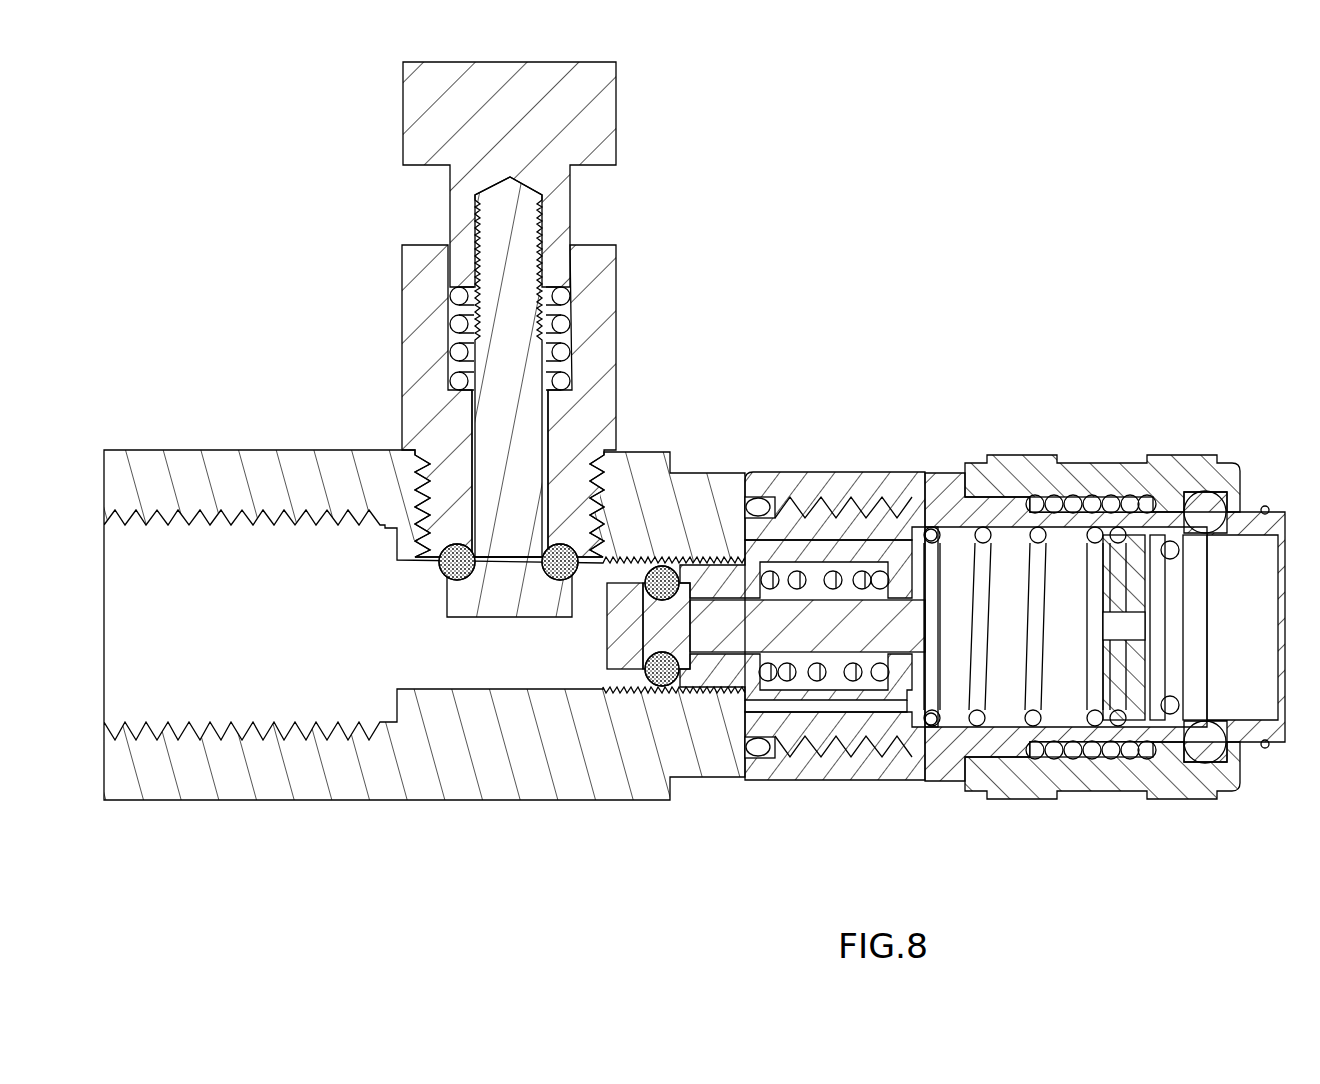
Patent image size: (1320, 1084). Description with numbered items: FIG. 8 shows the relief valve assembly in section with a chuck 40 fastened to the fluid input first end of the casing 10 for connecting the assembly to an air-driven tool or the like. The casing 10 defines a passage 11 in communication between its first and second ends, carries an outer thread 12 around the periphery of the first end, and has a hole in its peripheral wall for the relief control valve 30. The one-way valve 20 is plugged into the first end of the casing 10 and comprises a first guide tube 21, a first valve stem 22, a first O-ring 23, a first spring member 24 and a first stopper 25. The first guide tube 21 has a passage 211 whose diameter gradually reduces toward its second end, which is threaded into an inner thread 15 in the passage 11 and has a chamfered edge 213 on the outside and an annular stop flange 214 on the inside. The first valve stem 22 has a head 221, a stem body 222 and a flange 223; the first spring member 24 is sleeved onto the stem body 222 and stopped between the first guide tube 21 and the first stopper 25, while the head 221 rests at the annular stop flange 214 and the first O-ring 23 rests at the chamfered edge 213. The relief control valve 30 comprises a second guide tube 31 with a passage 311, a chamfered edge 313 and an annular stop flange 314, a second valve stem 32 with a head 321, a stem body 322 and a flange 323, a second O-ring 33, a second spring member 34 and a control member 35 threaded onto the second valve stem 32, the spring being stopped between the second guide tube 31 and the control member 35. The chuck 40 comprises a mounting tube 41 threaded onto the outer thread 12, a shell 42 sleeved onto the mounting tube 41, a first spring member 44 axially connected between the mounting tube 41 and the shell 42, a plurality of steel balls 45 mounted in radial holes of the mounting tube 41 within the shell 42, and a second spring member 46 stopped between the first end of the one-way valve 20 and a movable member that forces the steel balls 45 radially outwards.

The casing 10 is at (389, 830).
The passage 11 is at (500, 682).
The inner thread 15 is at (603, 692).
The outer thread 12 is at (837, 664).
The one-way valve 20 is at (902, 495).
The first guide tube 21 is at (833, 644).
The passage 211 is at (880, 684).
The chamfered edge 213 is at (762, 512).
The annular stop flange 214 is at (828, 500).
The first valve stem 22 is at (759, 737).
The head 221 is at (625, 624).
The stem body 222 is at (718, 618).
The flange 223 is at (693, 626).
The first O-ring 23 is at (660, 566).
The first spring member 24 is at (895, 682).
The first stopper 25 is at (928, 740).
The relief control valve 30 is at (300, 194).
The second guide tube 31 is at (608, 262).
The passage 311 is at (562, 316).
The chamfered edge 313 is at (438, 550).
The annular stop flange 314 is at (468, 540).
The second valve stem 32 is at (622, 397).
The head 321 is at (562, 592).
The stem body 322 is at (522, 348).
The flange 323 is at (552, 440).
The second O-ring 33 is at (445, 556).
The second spring member 34 is at (452, 330).
The control member 35 is at (415, 108).
The chuck 40 is at (1256, 375).
The mounting tube 41 is at (976, 752).
The shell 42 is at (1140, 718).
The first spring member 44 is at (1108, 498).
The steel balls 45 is at (1200, 505).
The second spring member 46 is at (1036, 543).